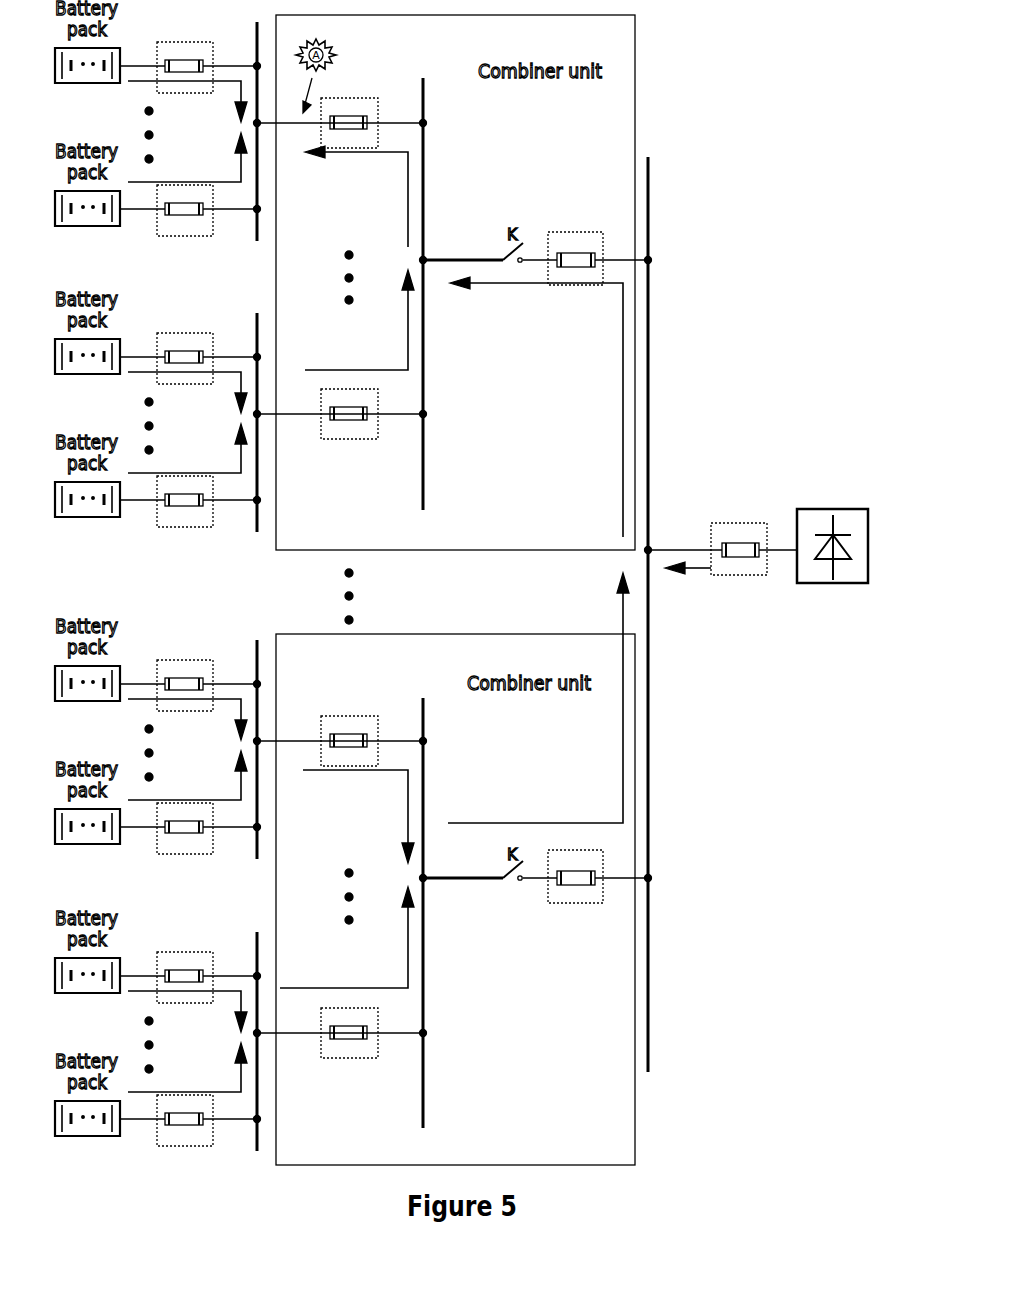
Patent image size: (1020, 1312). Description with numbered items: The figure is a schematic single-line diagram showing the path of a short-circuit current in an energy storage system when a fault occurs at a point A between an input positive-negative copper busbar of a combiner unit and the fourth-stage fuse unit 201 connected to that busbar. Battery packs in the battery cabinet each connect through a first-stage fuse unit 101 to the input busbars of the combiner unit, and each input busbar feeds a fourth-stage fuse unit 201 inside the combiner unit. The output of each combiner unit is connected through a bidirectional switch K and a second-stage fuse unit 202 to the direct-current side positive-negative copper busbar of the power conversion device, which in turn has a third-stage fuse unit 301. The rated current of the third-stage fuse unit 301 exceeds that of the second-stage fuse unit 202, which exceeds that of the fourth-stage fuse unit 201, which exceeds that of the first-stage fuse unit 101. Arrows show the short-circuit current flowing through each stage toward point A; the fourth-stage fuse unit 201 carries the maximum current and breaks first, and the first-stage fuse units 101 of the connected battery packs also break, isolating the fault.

The first-stage fuse unit 101 is at (175, 38).
The fourth-stage fuse unit 201 is at (338, 96).
The second-stage fuse unit 202 is at (565, 230).
The third-stage fuse unit 301 is at (741, 508).